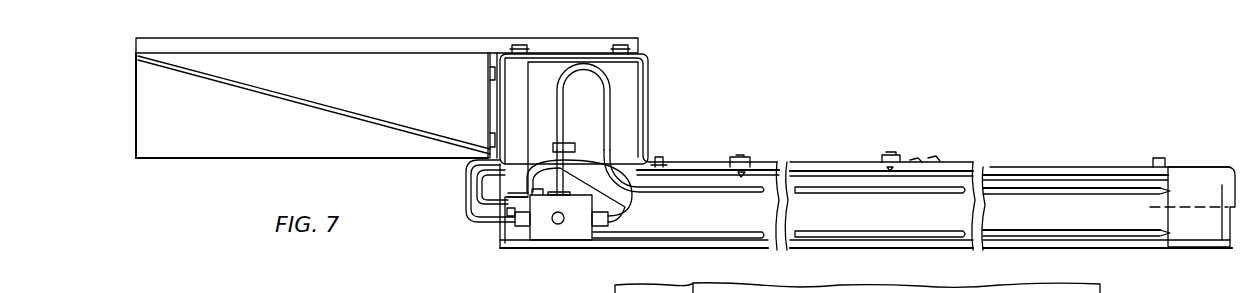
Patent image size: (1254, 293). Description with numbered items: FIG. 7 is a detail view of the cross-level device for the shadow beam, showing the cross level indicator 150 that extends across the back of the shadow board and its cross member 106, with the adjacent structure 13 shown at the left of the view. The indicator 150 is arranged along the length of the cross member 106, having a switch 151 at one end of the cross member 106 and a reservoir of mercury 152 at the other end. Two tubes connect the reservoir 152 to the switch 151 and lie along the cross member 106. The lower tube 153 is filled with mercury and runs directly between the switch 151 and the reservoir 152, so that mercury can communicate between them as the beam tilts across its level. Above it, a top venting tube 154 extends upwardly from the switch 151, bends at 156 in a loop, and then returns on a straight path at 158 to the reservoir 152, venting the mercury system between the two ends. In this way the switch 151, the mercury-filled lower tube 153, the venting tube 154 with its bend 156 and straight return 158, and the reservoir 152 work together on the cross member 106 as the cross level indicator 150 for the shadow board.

The boom 13 is at (409, 35).
The cross member 106 is at (738, 215).
The cross level indicator 150 is at (575, 230).
The switch 151 is at (542, 228).
The reservoir of mercury 152 is at (1200, 226).
The lower tube 153 is at (673, 232).
The top venting tube 154 is at (623, 200).
The bend 156 is at (573, 63).
The straight path 158 is at (713, 195).